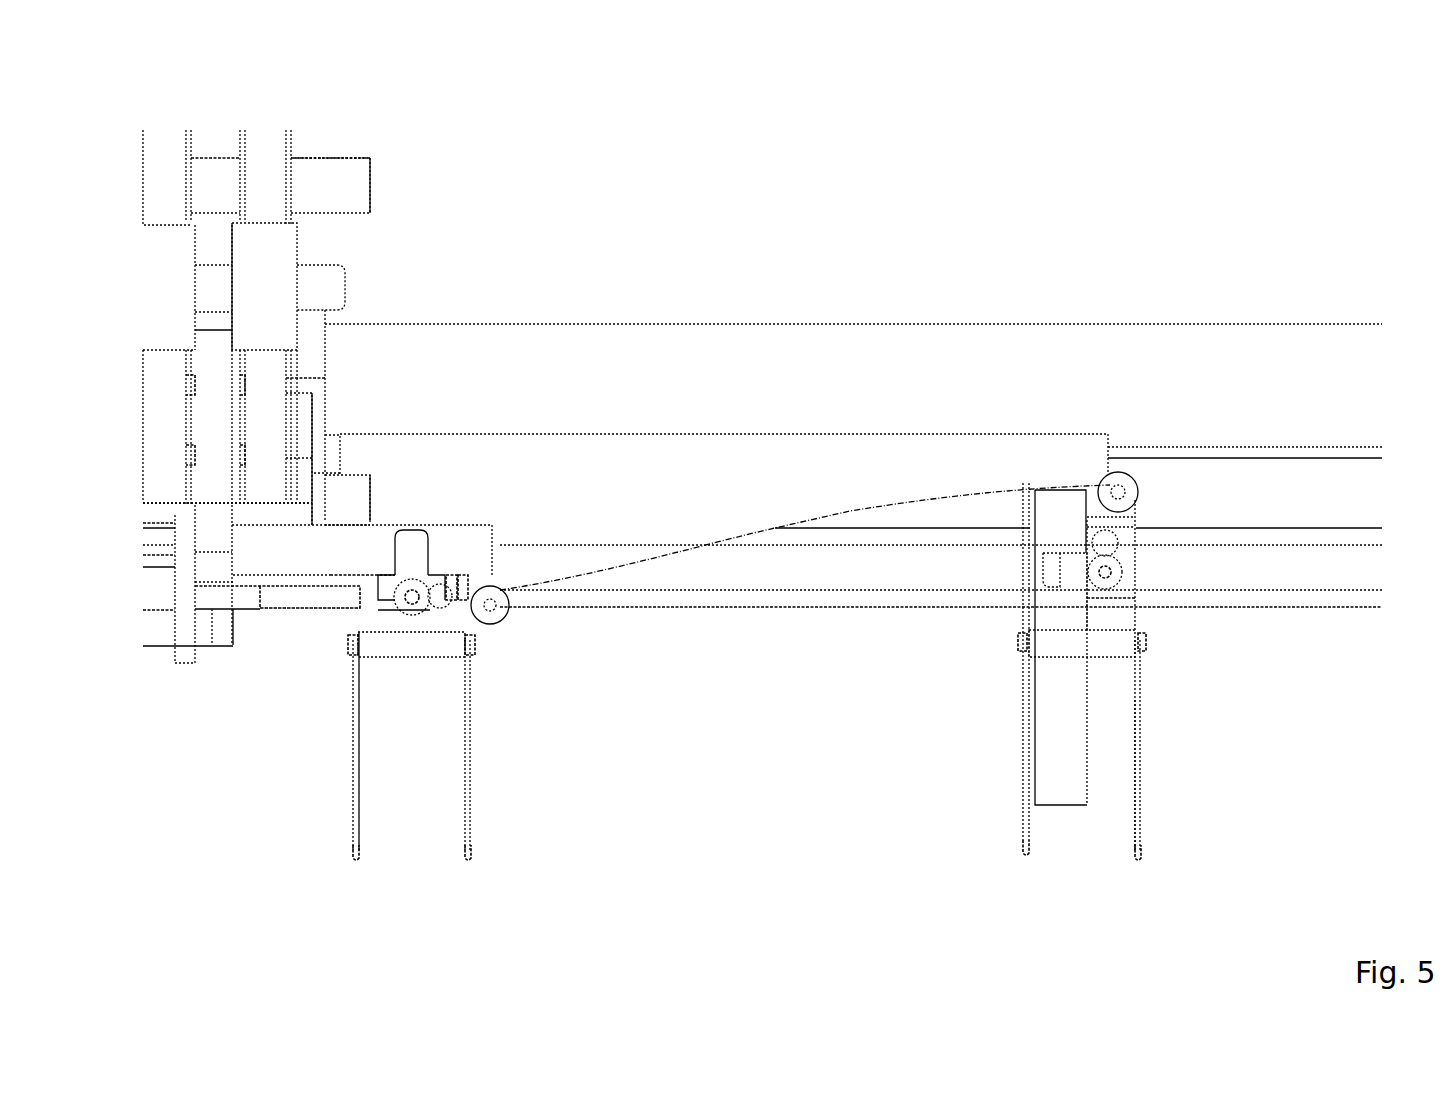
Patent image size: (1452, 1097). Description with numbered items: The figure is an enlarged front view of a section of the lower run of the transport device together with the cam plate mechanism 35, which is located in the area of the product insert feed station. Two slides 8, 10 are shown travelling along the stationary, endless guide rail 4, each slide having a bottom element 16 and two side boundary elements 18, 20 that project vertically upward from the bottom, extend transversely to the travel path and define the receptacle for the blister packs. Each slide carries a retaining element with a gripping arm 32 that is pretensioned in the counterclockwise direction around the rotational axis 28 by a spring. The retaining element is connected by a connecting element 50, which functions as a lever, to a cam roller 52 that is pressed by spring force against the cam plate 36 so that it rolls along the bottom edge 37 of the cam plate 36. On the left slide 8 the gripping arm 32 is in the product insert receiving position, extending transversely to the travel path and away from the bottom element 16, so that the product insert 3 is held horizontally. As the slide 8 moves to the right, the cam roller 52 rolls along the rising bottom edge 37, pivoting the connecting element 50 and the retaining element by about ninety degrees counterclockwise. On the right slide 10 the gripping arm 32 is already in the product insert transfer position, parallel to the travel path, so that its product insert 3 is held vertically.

The product insert 3 is at (315, 553).
The guide rail 4 is at (1330, 597).
The slide 8 is at (467, 738).
The slide 10 is at (1138, 725).
The bottom element 16 is at (413, 645).
The side boundary element 18 is at (467, 847).
The side boundary element 20 is at (357, 840).
The rotational axis 28 is at (408, 597).
The gripping arm 32 is at (413, 548).
The cam plate mechanism 35 is at (818, 252).
The cam plate 36 is at (590, 460).
The bottom edge 37 is at (848, 510).
The connecting element 50 is at (442, 588).
The cam roller 52 is at (493, 600).